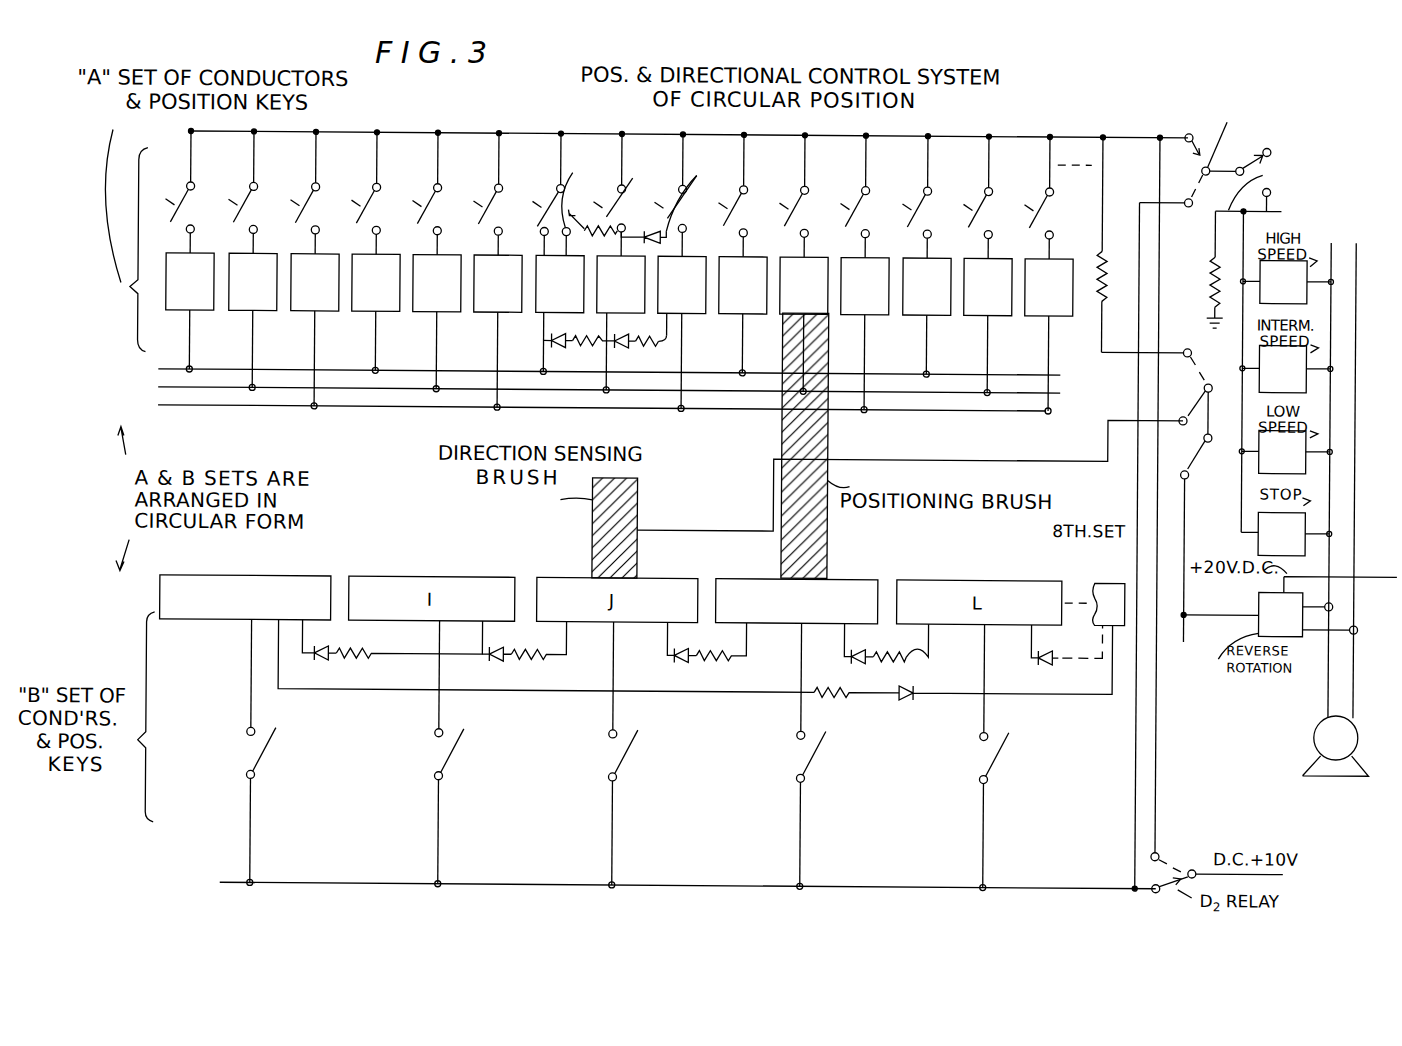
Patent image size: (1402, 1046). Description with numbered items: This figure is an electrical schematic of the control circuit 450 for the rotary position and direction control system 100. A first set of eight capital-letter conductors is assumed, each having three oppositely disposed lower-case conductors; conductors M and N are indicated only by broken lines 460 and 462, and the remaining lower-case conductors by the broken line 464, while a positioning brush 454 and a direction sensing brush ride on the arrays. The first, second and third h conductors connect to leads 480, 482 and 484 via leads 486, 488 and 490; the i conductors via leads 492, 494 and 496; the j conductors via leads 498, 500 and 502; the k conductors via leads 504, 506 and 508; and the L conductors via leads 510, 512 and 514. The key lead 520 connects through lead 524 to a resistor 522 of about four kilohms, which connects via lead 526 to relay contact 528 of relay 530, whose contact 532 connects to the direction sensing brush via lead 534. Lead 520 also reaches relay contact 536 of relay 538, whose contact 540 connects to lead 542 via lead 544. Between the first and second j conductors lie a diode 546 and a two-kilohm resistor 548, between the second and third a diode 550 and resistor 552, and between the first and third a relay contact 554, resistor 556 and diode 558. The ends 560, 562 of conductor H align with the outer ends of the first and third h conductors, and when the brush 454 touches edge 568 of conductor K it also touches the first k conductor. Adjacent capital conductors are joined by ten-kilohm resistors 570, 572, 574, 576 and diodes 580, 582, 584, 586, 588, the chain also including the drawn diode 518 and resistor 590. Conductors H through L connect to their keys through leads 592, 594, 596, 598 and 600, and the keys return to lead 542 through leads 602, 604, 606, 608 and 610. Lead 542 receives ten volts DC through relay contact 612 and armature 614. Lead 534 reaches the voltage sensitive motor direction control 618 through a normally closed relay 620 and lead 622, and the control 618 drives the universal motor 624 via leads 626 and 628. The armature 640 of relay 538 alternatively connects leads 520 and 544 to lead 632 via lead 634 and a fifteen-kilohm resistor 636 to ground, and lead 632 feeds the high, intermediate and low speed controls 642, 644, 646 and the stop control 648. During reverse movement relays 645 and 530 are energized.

The position and directional control system 100 is at (198, 865).
The control circuit 450 is at (1097, 899).
The positioning brush 454 is at (822, 553).
The broken line for conductor M 460 is at (1133, 538).
The broken line for conductor N 462 is at (1080, 664).
The broken line for remaining lower-case conductors 464 is at (1077, 157).
The lead 480 is at (162, 368).
The lead 482 is at (162, 386).
The lead 484 is at (162, 404).
The lead 486 is at (192, 315).
The lead 488 is at (255, 315).
The lead 490 is at (317, 315).
The lead 492 is at (378, 315).
The lead 494 is at (439, 315).
The lead 496 is at (501, 340).
The lead 498 is at (548, 350).
The lead 500 is at (609, 393).
The lead 502 is at (685, 352).
The lead 504 is at (742, 374).
The lead 506 is at (786, 350).
The lead 508 is at (872, 340).
The lead 510 is at (933, 340).
The lead 512 is at (994, 340).
The lead 514 is at (1051, 345).
The diode 518 is at (324, 659).
The lead 520 is at (580, 131).
The resistor 522 is at (1124, 244).
The lead 524 is at (1104, 192).
The lead 526 is at (1180, 342).
The relay contact 528 is at (1210, 358).
The relay 530 is at (1186, 405).
The relay contact 532 is at (1184, 451).
The lead 534 is at (1048, 456).
The relay contact 536 is at (1187, 140).
The relay 538 is at (1240, 159).
The relay contact 540 is at (1183, 201).
The lead 542 is at (882, 884).
The lead 544 is at (1140, 820).
The diode 546 is at (552, 334).
The resistor 548 is at (590, 338).
The diode 550 is at (624, 343).
The resistor 552 is at (664, 334).
The relay contact 554 is at (581, 187).
The resistor 556 is at (623, 195).
The diode 558 is at (673, 200).
The end of conductor H 560 is at (163, 597).
The end of conductor H 562 is at (332, 575).
The edge of conductor K 568 is at (719, 576).
The resistor 570 is at (358, 656).
The resistor 572 is at (533, 656).
The resistor 574 is at (715, 656).
The resistor 576 is at (945, 665).
The diode 580 is at (503, 659).
The diode 582 is at (686, 659).
The diode 584 is at (862, 659).
The diode 586 is at (1052, 660).
The diode 588 is at (913, 694).
The resistor 590 is at (842, 692).
The lead 592 is at (255, 699).
The lead 594 is at (443, 711).
The lead 596 is at (617, 711).
The lead 598 is at (805, 711).
The lead 600 is at (988, 711).
The lead 602 is at (255, 851).
The lead 604 is at (443, 851).
The lead 606 is at (617, 851).
The lead 608 is at (805, 851).
The lead 610 is at (988, 851).
The relay contact 612 is at (1164, 886).
The armature 614 is at (1172, 875).
The voltage sensitive motor direction control 618 is at (1301, 620).
The normally closed relay 620 is at (1206, 556).
The lead 622 is at (1187, 540).
The universal motor 624 is at (1318, 725).
The lead 626 is at (1335, 601).
The lead 628 is at (1322, 625).
The lead 632 is at (1246, 222).
The lead 634 is at (1264, 184).
The resistor 636 is at (1213, 268).
The armature 640 is at (1236, 136).
The voltage sensitive motor speed control 642 is at (1302, 288).
The voltage sensitive motor speed control 644 is at (1302, 375).
The voltage sensitive motor speed control 646 is at (1302, 458).
The voltage sensitive motor stop control 648 is at (1302, 540).
The relay 645 is at (1196, 853).